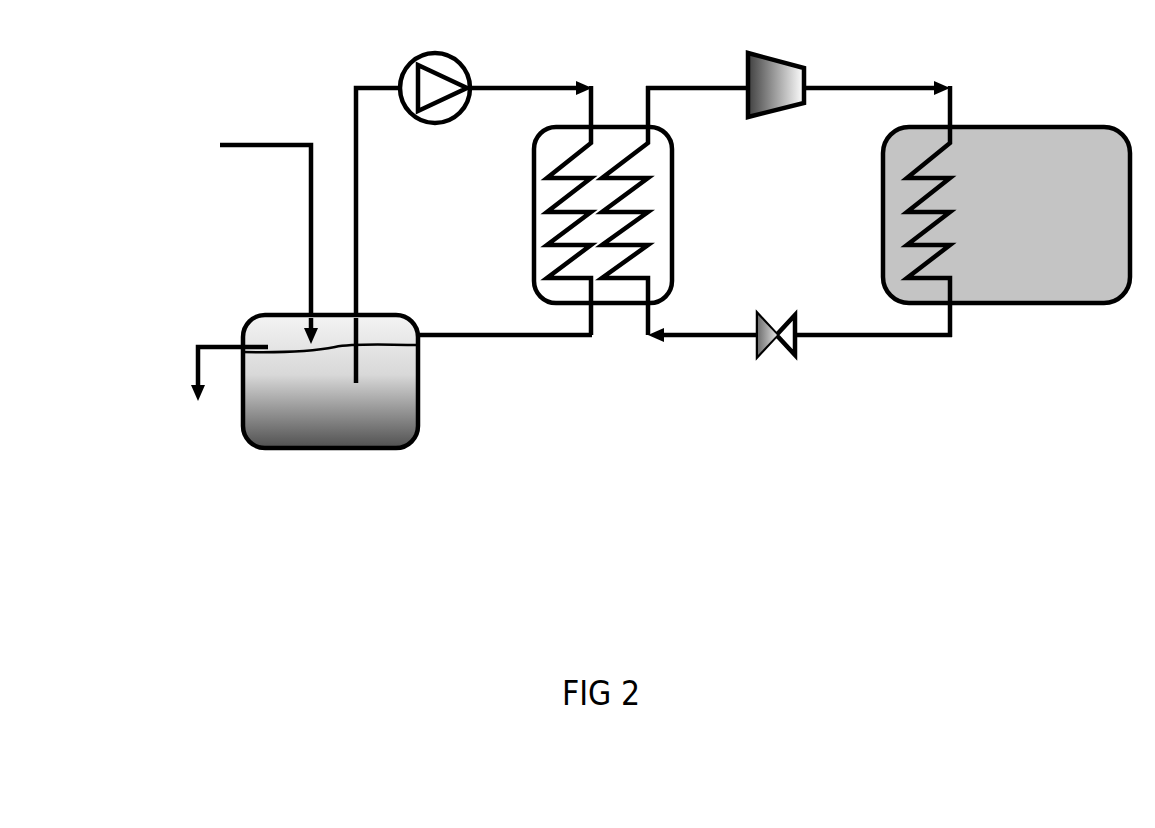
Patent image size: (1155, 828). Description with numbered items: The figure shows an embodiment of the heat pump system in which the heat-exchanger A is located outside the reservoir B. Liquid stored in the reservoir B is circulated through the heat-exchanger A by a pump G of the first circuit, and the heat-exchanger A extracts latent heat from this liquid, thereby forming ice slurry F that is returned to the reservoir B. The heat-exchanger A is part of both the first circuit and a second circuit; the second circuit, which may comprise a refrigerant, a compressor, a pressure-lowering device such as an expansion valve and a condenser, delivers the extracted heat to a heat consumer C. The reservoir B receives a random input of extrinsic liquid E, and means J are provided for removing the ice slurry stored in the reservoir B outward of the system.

The heat-exchanger A is at (586, 210).
The reservoir B is at (330, 410).
The heat consumer C is at (1006, 211).
The extrinsic liquid E is at (244, 239).
The ice slurry F is at (491, 349).
The pump G is at (474, 209).
The means for removing ice slurry J is at (229, 391).